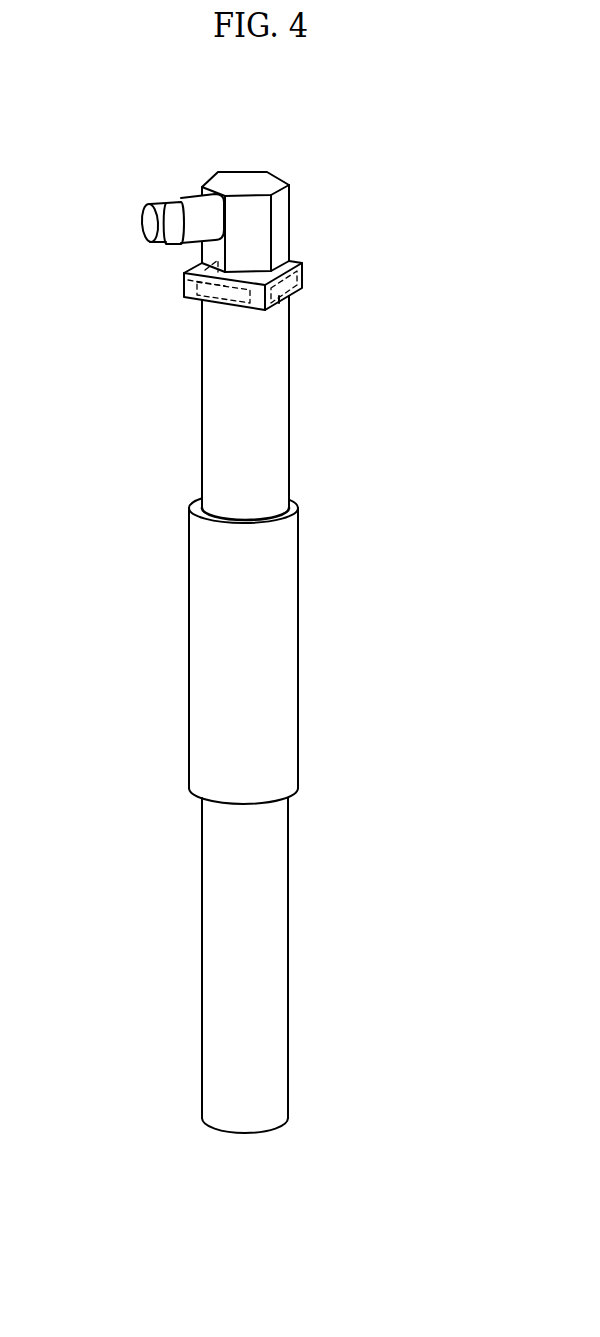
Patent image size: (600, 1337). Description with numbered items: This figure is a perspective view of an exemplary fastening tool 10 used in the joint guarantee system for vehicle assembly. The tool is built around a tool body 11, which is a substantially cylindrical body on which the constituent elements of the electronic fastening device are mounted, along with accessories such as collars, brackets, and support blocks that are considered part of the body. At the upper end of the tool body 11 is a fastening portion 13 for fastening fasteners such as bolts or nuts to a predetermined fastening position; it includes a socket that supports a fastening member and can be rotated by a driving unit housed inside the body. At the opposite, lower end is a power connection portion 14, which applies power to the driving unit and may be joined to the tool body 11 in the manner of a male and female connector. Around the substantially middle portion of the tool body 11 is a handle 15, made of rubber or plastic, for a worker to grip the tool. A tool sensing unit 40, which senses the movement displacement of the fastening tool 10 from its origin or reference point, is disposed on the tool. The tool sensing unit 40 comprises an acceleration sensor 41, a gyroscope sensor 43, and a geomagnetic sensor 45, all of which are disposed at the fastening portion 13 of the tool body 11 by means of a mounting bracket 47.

The fastening tool 10 is at (255, 119).
The tool body 11 is at (202, 445).
The fastening portion 13 is at (150, 223).
The power connection portion 14 is at (202, 960).
The handle 15 is at (292, 645).
The tool sensing unit 40 is at (93, 297).
The acceleration sensor 41 is at (230, 300).
The gyroscope sensor 43 is at (185, 283).
The geomagnetic sensor 45 is at (280, 300).
The mounting bracket 47 is at (303, 273).